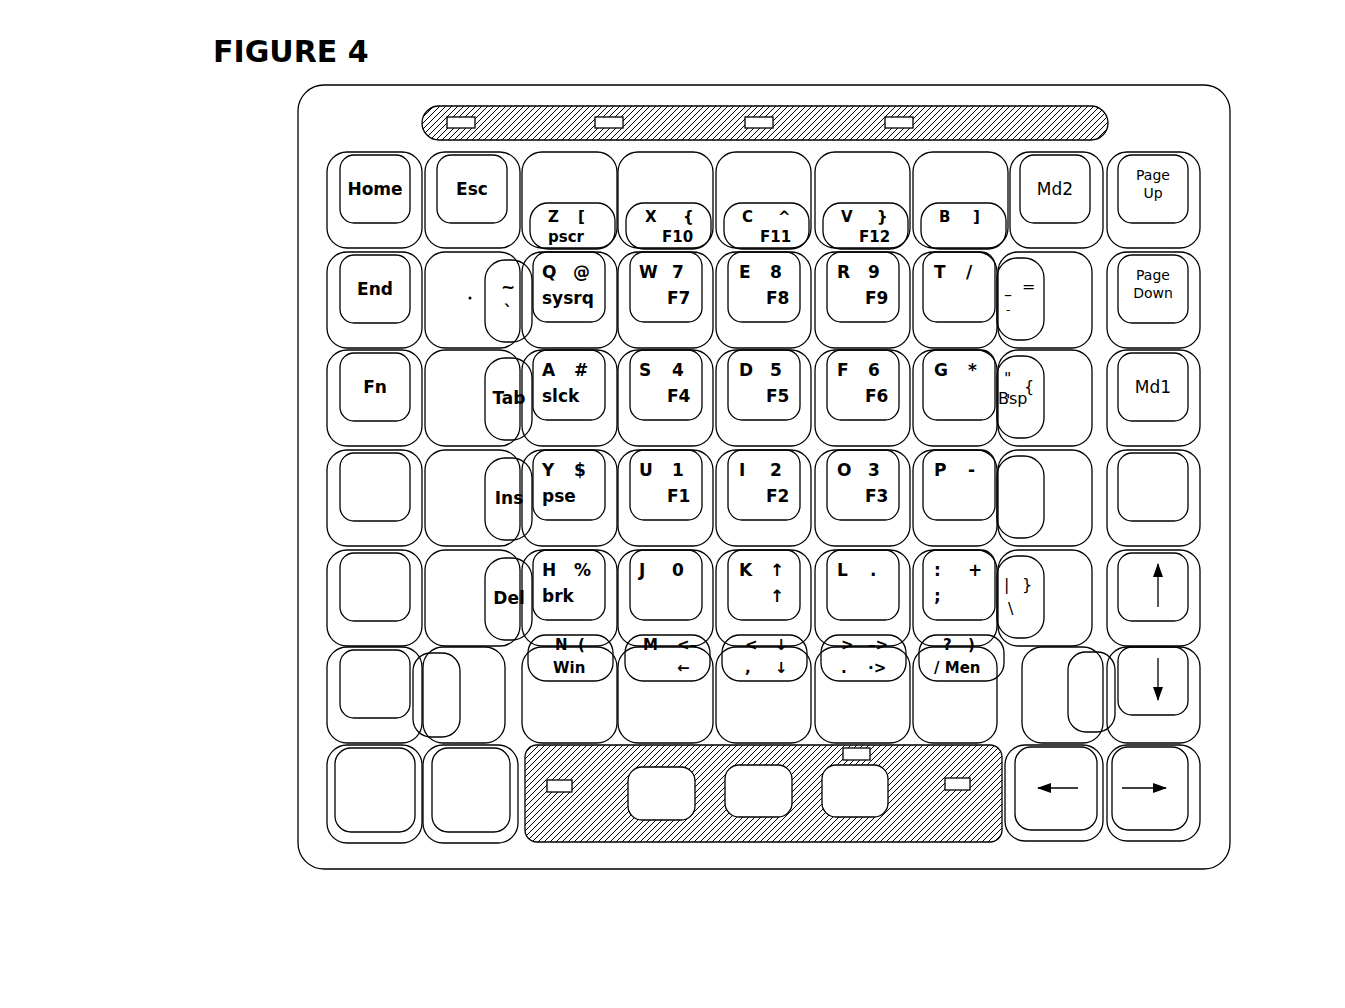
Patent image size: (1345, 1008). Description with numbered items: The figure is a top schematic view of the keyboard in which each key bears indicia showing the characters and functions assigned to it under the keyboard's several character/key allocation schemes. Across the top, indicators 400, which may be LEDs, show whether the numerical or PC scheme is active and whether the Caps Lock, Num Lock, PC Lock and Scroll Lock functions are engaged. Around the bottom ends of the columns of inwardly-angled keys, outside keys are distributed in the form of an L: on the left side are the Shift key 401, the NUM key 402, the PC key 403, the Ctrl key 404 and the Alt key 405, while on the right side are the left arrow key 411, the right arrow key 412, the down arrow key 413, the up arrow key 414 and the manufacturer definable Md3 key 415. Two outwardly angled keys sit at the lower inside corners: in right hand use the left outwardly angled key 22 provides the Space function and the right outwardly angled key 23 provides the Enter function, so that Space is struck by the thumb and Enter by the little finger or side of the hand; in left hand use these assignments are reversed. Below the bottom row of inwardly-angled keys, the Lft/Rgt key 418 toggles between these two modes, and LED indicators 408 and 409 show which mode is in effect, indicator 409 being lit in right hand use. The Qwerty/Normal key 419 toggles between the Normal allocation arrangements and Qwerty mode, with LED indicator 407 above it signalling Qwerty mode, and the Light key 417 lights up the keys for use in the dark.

The indicators 400 is at (745, 102).
The Alt key 405 is at (322, 489).
The Ctrl key 404 is at (322, 598).
The PC key 403 is at (322, 690).
The NUM key 402 is at (322, 790).
The Shift key 401 is at (441, 832).
The left outwardly angled key 22 is at (477, 708).
The LED indicator 408 is at (581, 799).
The Light key 417 is at (692, 819).
The Left/Right key 418 is at (758, 818).
The Qwerty/Normal key 419 is at (843, 819).
The LED indicator 407 is at (873, 758).
The LED indicator 409 is at (943, 792).
The right outwardly angled key 23 is at (1046, 707).
The left arrow key 411 is at (1088, 832).
The right arrow key 412 is at (1194, 785).
The down arrow key 413 is at (1194, 677).
The up arrow key 414 is at (1194, 578).
The manufacturer definable key 415 is at (1194, 485).